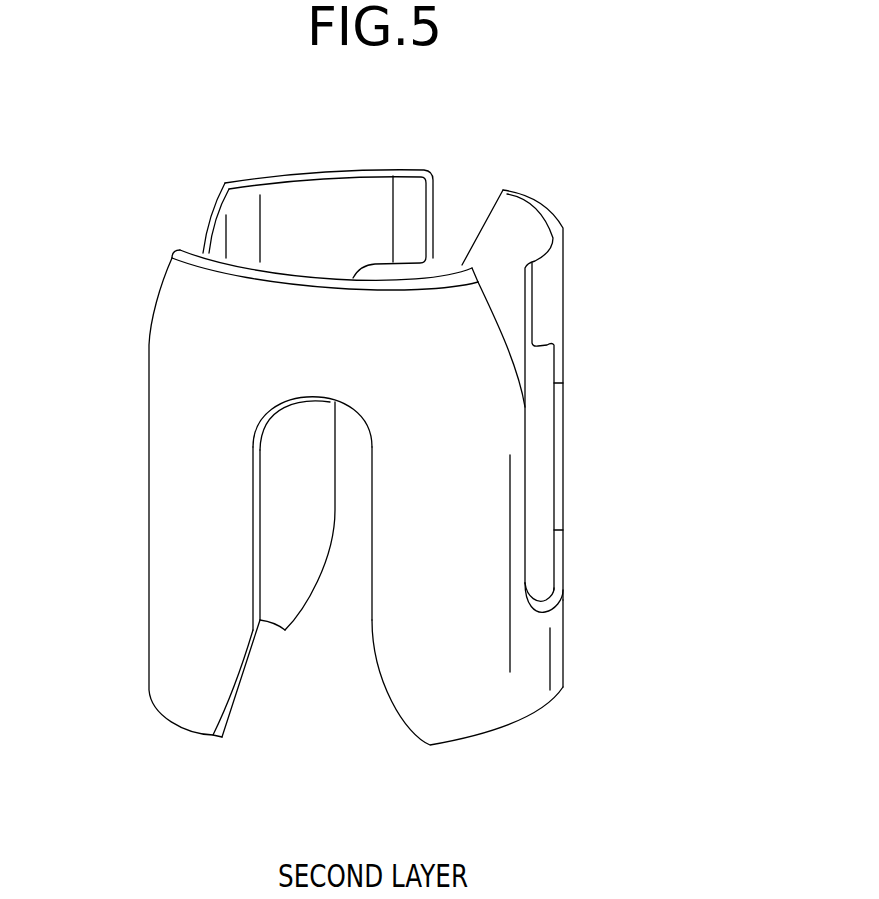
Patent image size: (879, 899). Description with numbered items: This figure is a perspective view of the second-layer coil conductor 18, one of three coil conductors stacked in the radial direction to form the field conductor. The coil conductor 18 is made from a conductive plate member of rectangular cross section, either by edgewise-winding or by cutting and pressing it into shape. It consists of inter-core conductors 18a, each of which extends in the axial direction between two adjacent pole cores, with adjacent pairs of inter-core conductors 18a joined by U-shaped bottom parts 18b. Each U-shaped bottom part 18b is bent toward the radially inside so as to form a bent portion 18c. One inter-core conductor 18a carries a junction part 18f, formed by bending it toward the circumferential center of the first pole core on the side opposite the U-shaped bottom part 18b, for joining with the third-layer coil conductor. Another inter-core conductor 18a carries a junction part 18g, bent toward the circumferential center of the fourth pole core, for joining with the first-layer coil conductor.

The coil conductor 18 is at (563, 197).
The inter-core conductor 18a is at (480, 500).
The U-shaped bottom part 18b is at (528, 692).
The bent portion 18c is at (265, 635).
The junction part 18f is at (537, 310).
The junction part 18g is at (407, 188).